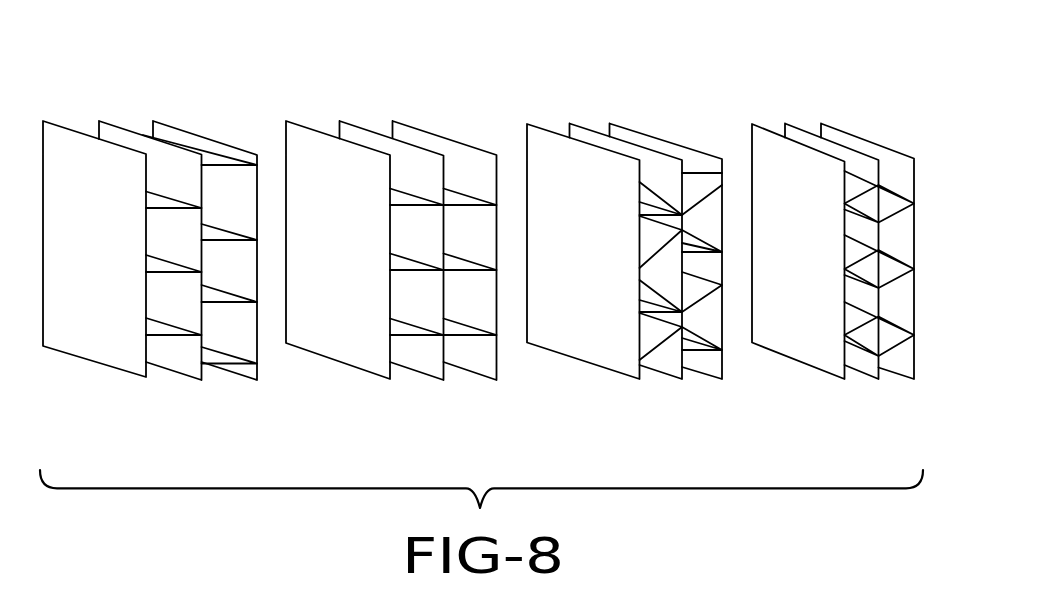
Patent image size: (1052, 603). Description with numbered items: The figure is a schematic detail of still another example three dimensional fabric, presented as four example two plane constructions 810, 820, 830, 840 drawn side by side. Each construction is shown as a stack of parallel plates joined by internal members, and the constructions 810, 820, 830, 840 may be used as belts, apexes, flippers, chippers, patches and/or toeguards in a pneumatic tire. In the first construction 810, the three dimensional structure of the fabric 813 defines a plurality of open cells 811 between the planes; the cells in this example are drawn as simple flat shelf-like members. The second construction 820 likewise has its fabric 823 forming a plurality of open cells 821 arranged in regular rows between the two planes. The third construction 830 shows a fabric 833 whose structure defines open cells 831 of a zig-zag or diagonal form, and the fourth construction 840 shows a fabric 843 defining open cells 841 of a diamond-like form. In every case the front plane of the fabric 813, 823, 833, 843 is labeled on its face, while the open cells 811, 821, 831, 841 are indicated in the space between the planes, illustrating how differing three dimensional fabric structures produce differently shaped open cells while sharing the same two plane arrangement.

The two plane construction 810 is at (150, 222).
The open cell 811 is at (178, 300).
The fabric 813 is at (94, 249).
The two plane construction 820 is at (391, 223).
The open cell 821 is at (427, 304).
The fabric 823 is at (338, 250).
The two plane construction 830 is at (624, 229).
The open cell 831 is at (710, 310).
The fabric 833 is at (583, 251).
The two plane construction 840 is at (833, 219).
The open cell 841 is at (875, 272).
The fabric 843 is at (798, 251).